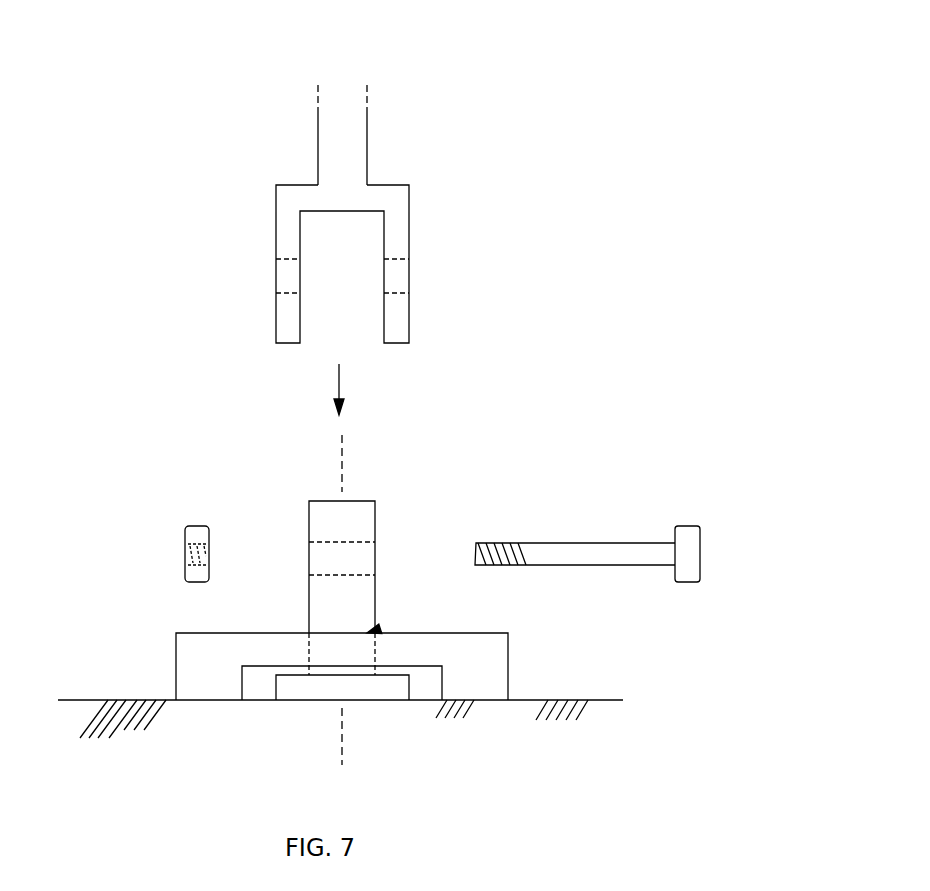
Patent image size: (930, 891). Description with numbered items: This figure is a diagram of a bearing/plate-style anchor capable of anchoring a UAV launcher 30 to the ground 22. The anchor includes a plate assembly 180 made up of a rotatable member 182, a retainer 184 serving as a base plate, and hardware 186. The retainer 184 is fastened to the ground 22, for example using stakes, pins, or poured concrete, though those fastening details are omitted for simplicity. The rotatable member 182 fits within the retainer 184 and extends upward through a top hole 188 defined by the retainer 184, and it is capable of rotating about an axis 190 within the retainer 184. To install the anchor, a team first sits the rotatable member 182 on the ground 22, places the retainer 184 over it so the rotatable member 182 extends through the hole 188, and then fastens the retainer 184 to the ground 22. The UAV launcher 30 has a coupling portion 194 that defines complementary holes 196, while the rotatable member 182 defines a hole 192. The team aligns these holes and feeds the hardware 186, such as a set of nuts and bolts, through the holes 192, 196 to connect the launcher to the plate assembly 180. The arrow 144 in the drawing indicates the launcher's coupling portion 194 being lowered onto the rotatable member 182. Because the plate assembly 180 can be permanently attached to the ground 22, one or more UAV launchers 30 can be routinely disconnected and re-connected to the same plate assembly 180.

The UAV launcher 30 is at (322, 167).
The coupling portion 194 is at (285, 215).
The complementary holes 196 is at (264, 264).
The direction of insertion 144 is at (337, 381).
The plate assembly 180 is at (223, 487).
The rotatable member 182 is at (316, 517).
The hole 192 is at (304, 557).
The top hole 188 is at (381, 629).
The retainer 184 is at (183, 657).
The hardware 186 is at (505, 496).
The ground 22 is at (396, 778).
The axis 190 is at (341, 750).